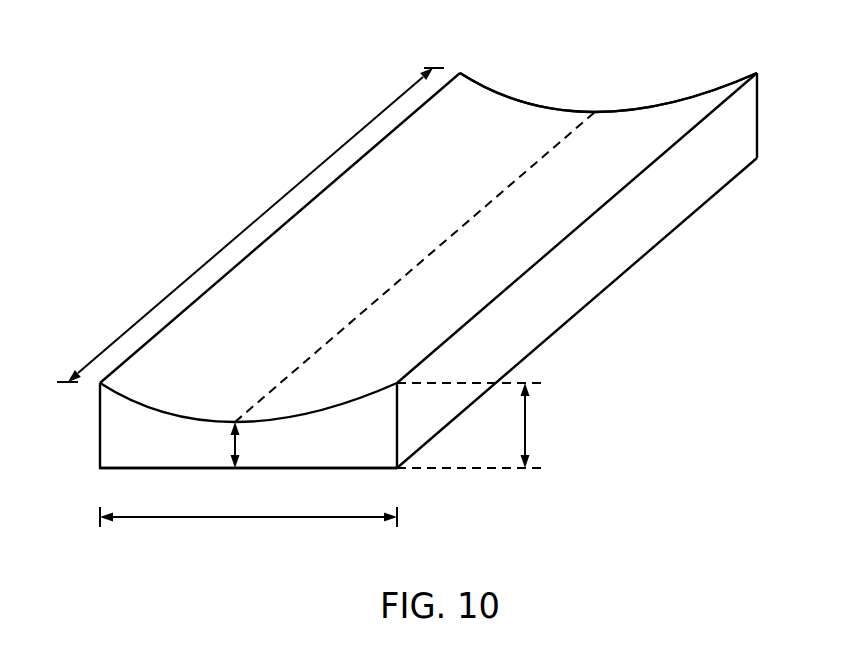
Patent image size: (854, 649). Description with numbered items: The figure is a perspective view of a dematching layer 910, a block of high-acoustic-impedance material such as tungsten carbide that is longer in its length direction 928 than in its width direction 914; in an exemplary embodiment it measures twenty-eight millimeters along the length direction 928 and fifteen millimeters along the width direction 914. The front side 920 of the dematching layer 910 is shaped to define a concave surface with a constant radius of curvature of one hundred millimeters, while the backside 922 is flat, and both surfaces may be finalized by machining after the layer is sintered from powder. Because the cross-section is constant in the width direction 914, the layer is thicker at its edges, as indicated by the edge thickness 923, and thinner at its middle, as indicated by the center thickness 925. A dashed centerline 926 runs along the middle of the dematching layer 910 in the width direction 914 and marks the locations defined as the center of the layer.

The dematching layer 910 is at (677, 63).
The width direction 914 is at (251, 522).
The front side 920 is at (538, 112).
The backside 922 is at (133, 470).
The edge thickness 923 is at (528, 424).
The center thickness 925 is at (241, 440).
The centerline 926 is at (457, 232).
The length direction 928 is at (258, 216).